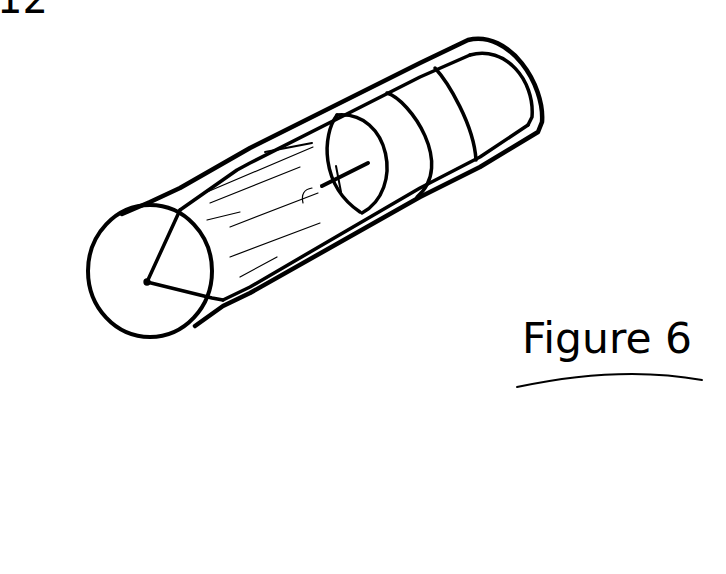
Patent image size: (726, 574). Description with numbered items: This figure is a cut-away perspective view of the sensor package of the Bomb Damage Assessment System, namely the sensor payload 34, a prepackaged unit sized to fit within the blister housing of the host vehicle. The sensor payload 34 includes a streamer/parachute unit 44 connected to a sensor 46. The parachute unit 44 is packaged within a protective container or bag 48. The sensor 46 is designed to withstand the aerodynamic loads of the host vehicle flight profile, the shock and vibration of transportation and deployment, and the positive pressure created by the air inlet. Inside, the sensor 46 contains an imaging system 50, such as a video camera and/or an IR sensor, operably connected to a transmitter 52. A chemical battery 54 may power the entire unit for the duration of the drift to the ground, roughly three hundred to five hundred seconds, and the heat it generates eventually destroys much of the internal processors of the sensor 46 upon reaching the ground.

The sensor payload 34 is at (315, 110).
The streamer/parachute unit 44 is at (270, 257).
The sensor 46 is at (492, 160).
The protective container or bag 48 is at (147, 282).
The imaging system 50 is at (505, 108).
The transmitter 52 is at (415, 200).
The chemical battery 54 is at (477, 163).